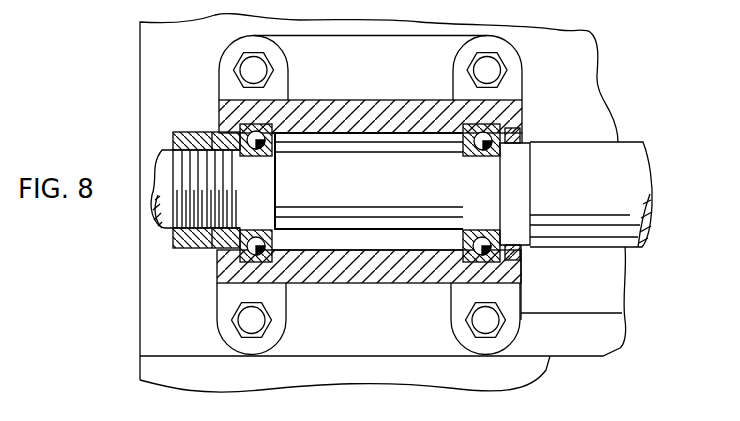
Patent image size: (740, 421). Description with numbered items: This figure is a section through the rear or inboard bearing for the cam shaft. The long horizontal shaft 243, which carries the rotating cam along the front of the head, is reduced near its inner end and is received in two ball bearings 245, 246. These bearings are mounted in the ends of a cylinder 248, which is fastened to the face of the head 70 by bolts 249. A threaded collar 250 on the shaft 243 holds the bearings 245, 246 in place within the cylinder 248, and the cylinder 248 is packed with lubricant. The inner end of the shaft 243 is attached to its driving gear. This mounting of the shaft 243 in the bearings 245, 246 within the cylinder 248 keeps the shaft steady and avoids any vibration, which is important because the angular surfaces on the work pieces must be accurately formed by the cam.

The head 70 is at (598, 107).
The shaft 243 is at (593, 160).
The ball bearing 245 is at (463, 241).
The ball bearing 246 is at (275, 237).
The cylinder 248 is at (362, 106).
The bolts 249 is at (258, 70).
The threaded collar 250 is at (200, 249).